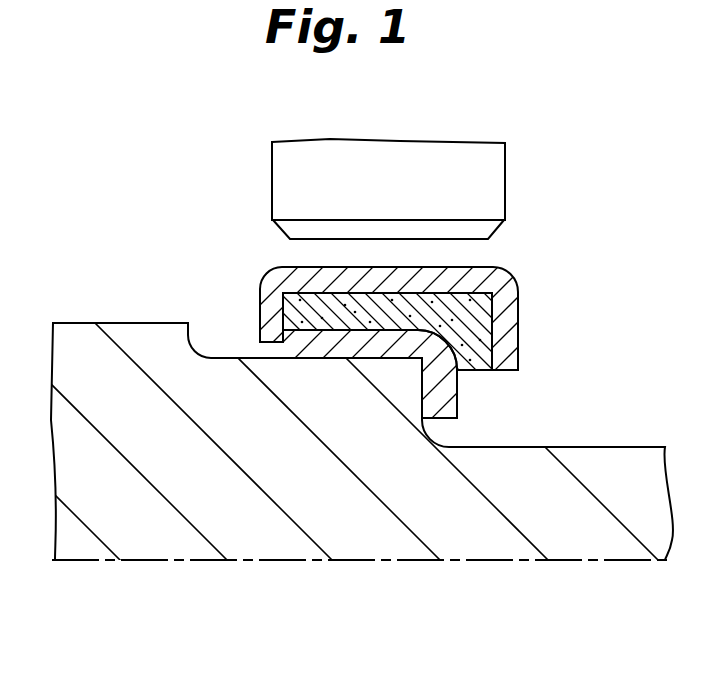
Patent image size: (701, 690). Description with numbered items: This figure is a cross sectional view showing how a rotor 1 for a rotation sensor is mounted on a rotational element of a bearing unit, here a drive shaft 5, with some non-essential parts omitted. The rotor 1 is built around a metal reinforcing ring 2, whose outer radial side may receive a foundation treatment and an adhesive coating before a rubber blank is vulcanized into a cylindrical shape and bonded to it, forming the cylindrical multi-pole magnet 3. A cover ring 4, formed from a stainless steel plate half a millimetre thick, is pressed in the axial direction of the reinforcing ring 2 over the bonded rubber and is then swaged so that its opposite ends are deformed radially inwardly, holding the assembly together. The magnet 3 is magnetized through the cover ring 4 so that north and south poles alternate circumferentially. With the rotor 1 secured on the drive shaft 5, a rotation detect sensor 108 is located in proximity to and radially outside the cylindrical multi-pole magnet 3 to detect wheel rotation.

The rotor 1 is at (402, 313).
The reinforcing ring 2 is at (437, 385).
The cylindrical multi-pole magnet 3 is at (472, 337).
The cover ring 4 is at (497, 290).
The drive shaft 5 is at (421, 505).
The rotation detect sensor 108 is at (482, 169).